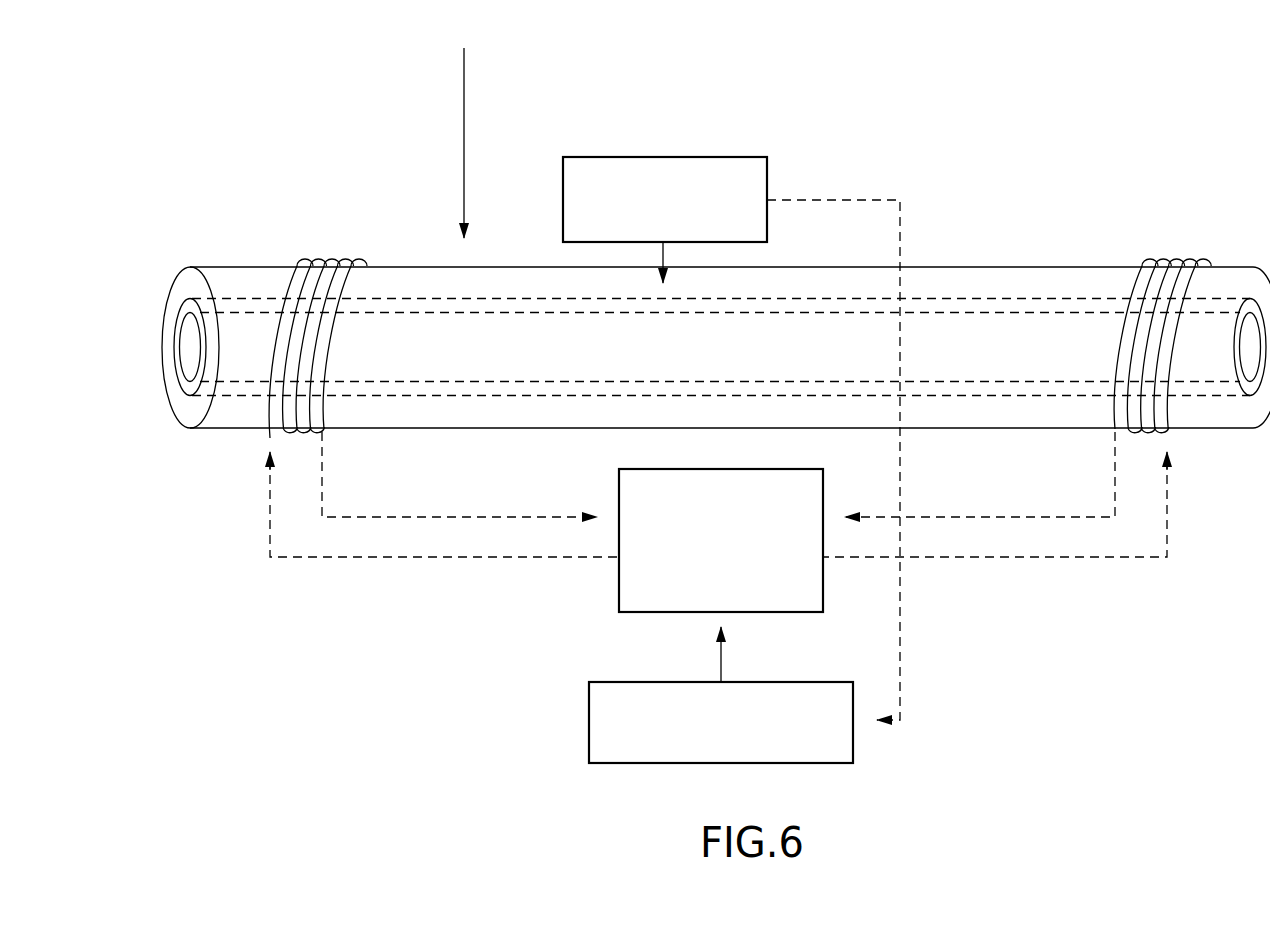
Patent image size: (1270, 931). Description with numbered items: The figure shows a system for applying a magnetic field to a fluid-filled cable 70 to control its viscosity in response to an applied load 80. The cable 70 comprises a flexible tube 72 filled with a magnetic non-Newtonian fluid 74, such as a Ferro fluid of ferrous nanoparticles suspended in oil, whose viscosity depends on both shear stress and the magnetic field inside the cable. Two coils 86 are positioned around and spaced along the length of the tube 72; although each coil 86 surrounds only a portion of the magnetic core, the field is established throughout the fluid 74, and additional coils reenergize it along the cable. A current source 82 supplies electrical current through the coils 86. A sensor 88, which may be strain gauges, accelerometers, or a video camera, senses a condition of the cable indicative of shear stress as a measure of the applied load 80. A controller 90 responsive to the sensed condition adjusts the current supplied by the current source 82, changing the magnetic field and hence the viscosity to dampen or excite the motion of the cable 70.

The cable 70 is at (716, 289).
The flexible tube 72 is at (1088, 200).
The magnetic NNF 74 is at (995, 300).
The applied load 80 is at (433, 143).
The current source 82 is at (823, 580).
The coils 86 is at (284, 252).
The sensor 88 is at (716, 142).
The controller 90 is at (853, 748).